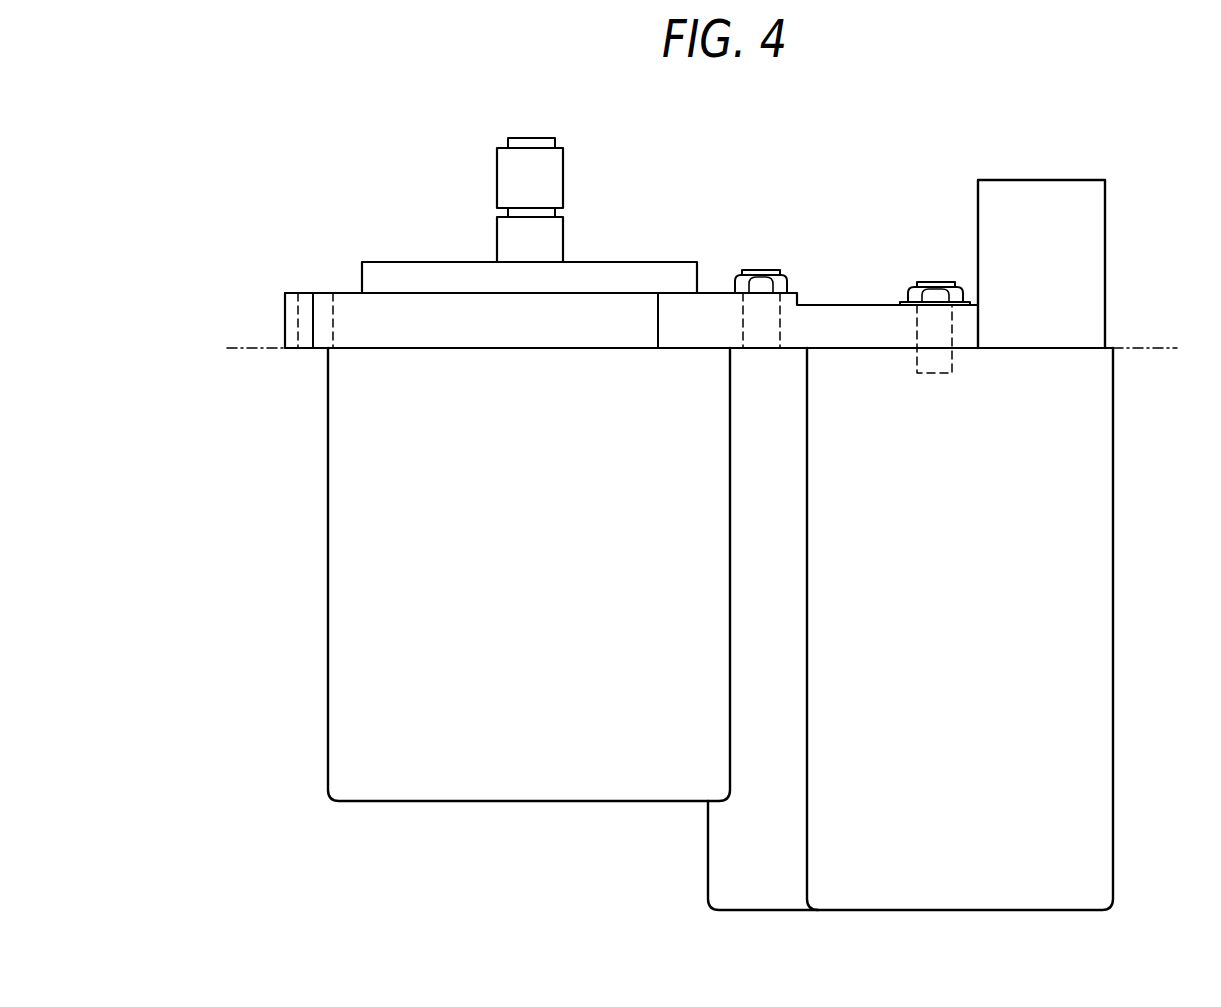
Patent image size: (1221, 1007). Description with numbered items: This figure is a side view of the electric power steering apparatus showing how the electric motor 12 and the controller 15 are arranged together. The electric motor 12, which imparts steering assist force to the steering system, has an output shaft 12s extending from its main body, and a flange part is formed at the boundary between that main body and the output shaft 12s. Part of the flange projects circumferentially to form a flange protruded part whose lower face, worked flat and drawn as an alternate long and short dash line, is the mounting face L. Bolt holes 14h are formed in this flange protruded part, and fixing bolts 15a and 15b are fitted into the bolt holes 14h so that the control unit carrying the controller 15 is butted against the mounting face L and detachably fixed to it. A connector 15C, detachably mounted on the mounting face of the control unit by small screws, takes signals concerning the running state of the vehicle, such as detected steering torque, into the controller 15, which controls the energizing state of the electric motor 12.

The electric motor 12 is at (328, 558).
The output shaft 12s is at (564, 177).
The bolt holes 14h is at (913, 327).
The controller 15 is at (1113, 572).
The fixing bolt 15a is at (758, 271).
The fixing bolt 15b is at (933, 281).
The connector 15C is at (1047, 179).
The mounting face L is at (245, 348).